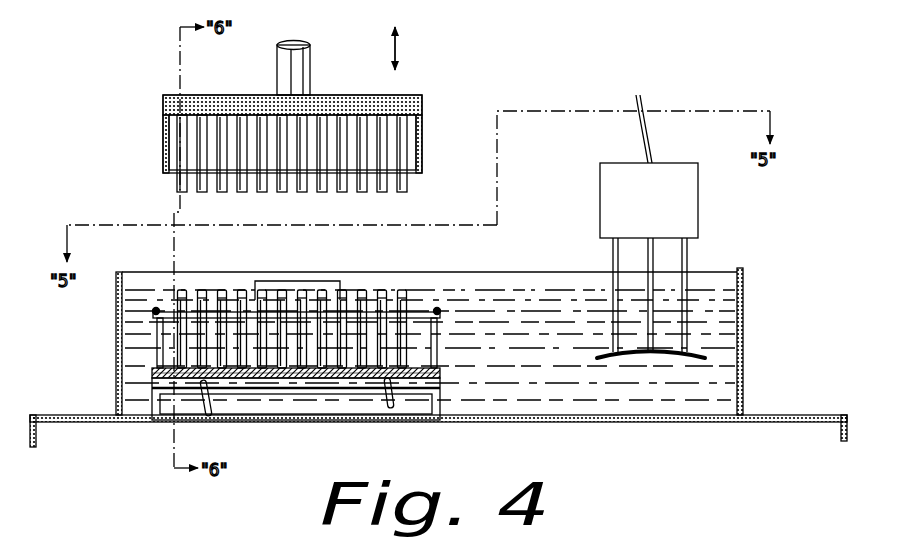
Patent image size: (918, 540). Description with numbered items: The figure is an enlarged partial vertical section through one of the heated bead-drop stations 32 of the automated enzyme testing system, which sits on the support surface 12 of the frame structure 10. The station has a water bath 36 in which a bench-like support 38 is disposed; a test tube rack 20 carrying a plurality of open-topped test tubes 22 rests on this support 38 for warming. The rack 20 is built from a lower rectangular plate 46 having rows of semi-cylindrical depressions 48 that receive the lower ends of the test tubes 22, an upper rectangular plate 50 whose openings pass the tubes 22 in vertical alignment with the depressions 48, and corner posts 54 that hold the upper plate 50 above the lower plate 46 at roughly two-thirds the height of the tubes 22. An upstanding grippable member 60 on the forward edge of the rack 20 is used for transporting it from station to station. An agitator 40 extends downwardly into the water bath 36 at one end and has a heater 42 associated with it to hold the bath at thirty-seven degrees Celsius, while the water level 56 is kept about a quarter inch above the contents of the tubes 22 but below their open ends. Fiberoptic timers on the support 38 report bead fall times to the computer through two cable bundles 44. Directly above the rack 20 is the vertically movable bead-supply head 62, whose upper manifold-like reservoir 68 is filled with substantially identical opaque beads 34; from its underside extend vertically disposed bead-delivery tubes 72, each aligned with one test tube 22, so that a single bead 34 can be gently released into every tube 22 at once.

The frame structure 10 is at (662, 426).
The support surface 12 is at (809, 413).
The test tube rack 20 is at (448, 378).
The test tube 22 is at (405, 290).
The bead-drop station 32 is at (460, 92).
The bead 34 is at (413, 96).
The water bath 36 is at (745, 327).
The bench-like support 38 is at (268, 380).
The agitator 40 is at (641, 359).
The heater 42 is at (701, 204).
The cable bundles 44 is at (397, 402).
The lower rectangular plate 46 is at (317, 380).
The semi-cylindrical depressions 48 is at (352, 378).
The upper rectangular plate 50 is at (172, 312).
The corner posts 54 is at (442, 336).
The water level 56 is at (722, 293).
The grippable member 60 is at (292, 281).
The bead-supply head 62 is at (243, 92).
The manifold-like reservoir 68 is at (348, 95).
The bead-delivery tubes 72 is at (362, 192).